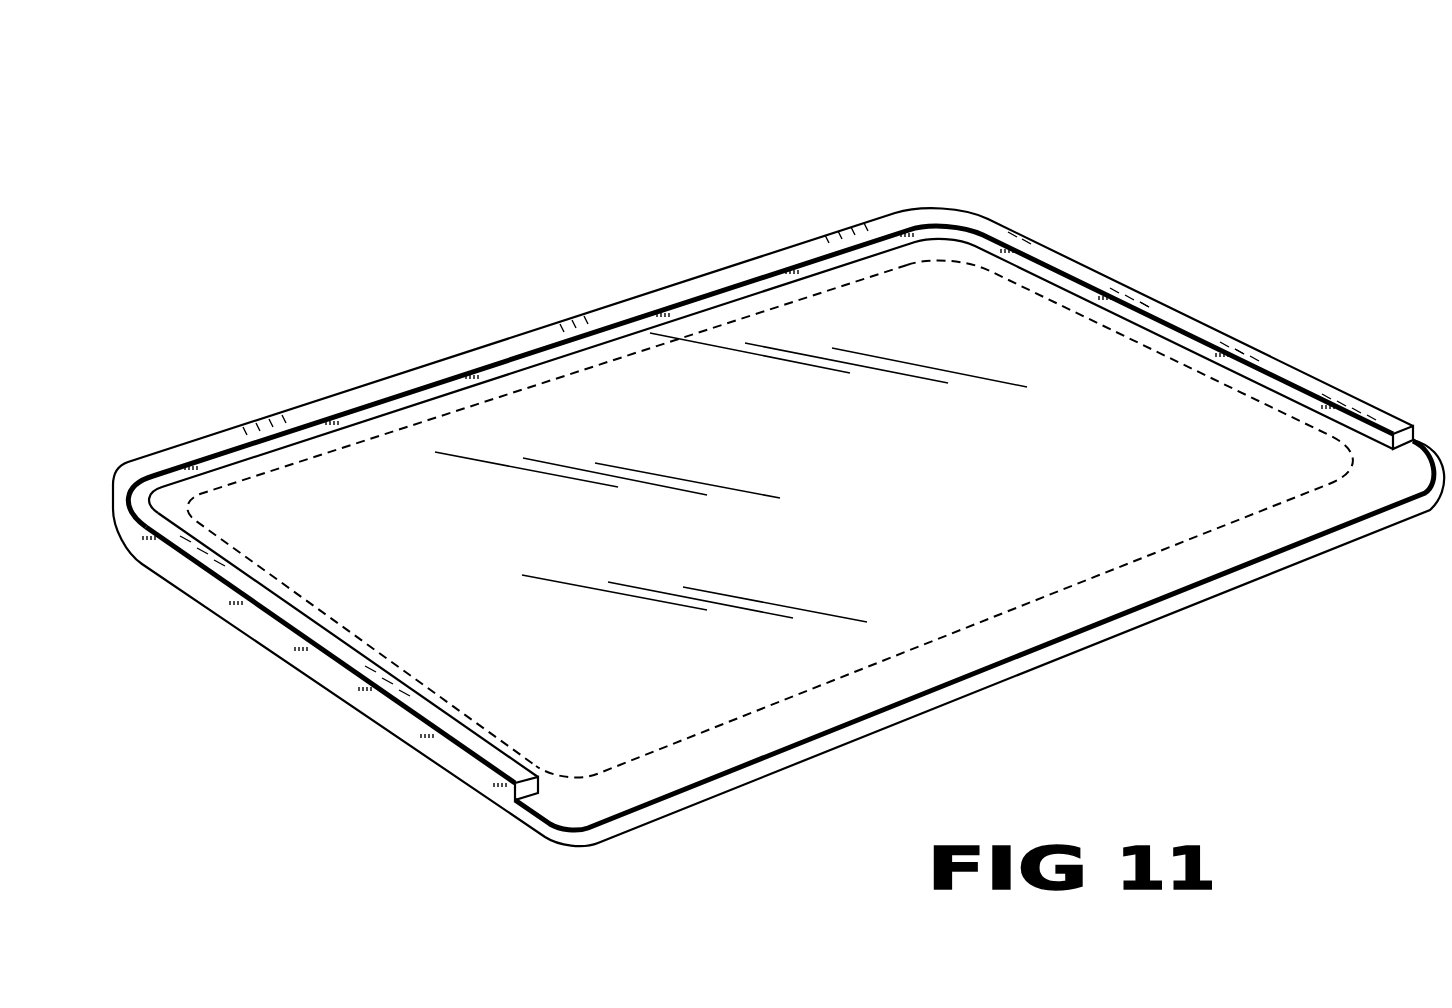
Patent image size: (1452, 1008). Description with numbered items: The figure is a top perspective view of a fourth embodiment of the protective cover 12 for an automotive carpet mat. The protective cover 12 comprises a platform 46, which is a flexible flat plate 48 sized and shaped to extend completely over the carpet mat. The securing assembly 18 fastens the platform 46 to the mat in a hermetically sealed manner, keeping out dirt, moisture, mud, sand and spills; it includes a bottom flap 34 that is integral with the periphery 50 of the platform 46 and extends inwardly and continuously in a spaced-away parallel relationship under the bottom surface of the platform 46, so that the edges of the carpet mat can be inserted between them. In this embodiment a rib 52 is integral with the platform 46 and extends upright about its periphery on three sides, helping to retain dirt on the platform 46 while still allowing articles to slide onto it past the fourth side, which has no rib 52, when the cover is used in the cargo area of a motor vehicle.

The protective cover 12 is at (818, 157).
The securing assembly 18 is at (390, 433).
The bottom flap 34 is at (944, 630).
The platform 46 is at (1038, 342).
The flexible flat plate 48 is at (1173, 397).
The periphery 50 is at (462, 752).
The rib 52 is at (643, 311).